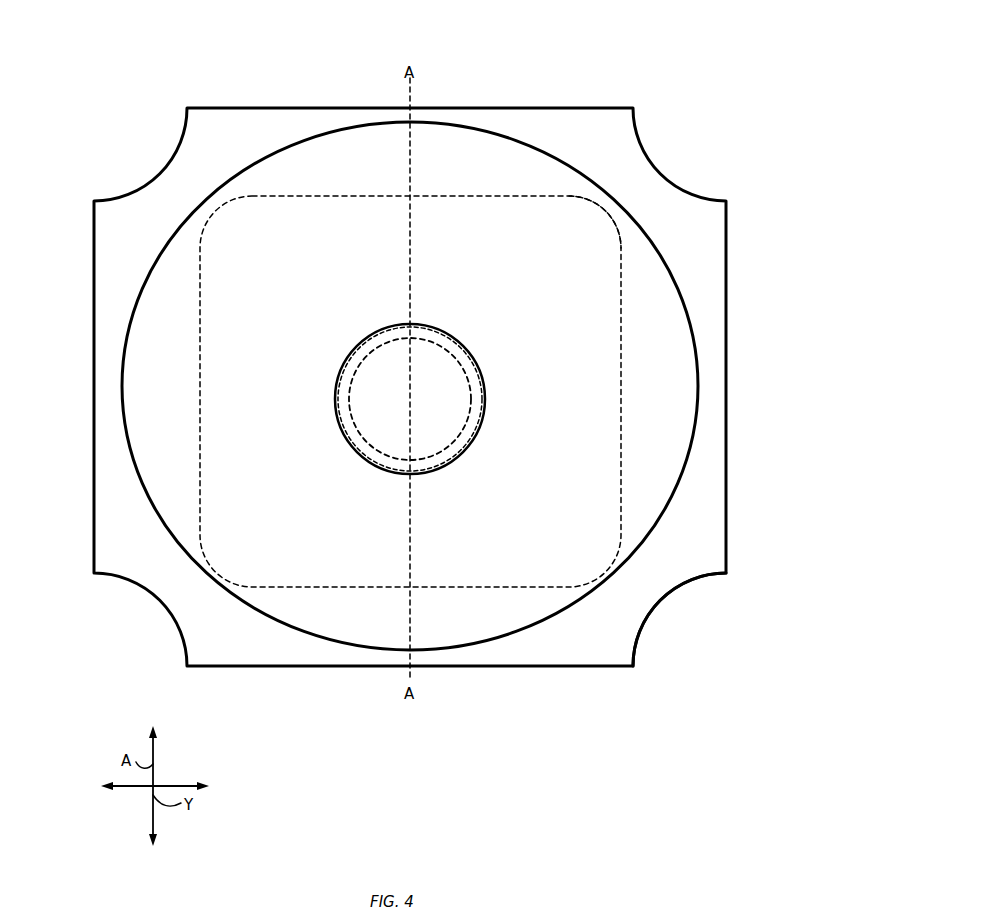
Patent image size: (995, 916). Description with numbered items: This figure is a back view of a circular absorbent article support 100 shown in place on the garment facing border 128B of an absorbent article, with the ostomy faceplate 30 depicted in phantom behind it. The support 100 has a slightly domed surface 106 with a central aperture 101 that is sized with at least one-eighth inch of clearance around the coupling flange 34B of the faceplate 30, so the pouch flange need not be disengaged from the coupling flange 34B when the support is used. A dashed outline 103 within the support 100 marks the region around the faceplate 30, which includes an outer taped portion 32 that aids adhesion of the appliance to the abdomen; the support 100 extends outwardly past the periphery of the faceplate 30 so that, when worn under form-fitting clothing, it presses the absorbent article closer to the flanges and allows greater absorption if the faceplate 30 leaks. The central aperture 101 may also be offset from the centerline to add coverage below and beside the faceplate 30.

The absorbent article support 100 is at (644, 80).
The central aperture 101 is at (333, 410).
The active display area 103 is at (470, 280).
The slightly domed surface 106 is at (290, 305).
The faceplate 30 is at (604, 218).
The outer taped portion 32 is at (605, 242).
The coupling flange 34B is at (365, 353).
The garment facing border 128B is at (620, 623).